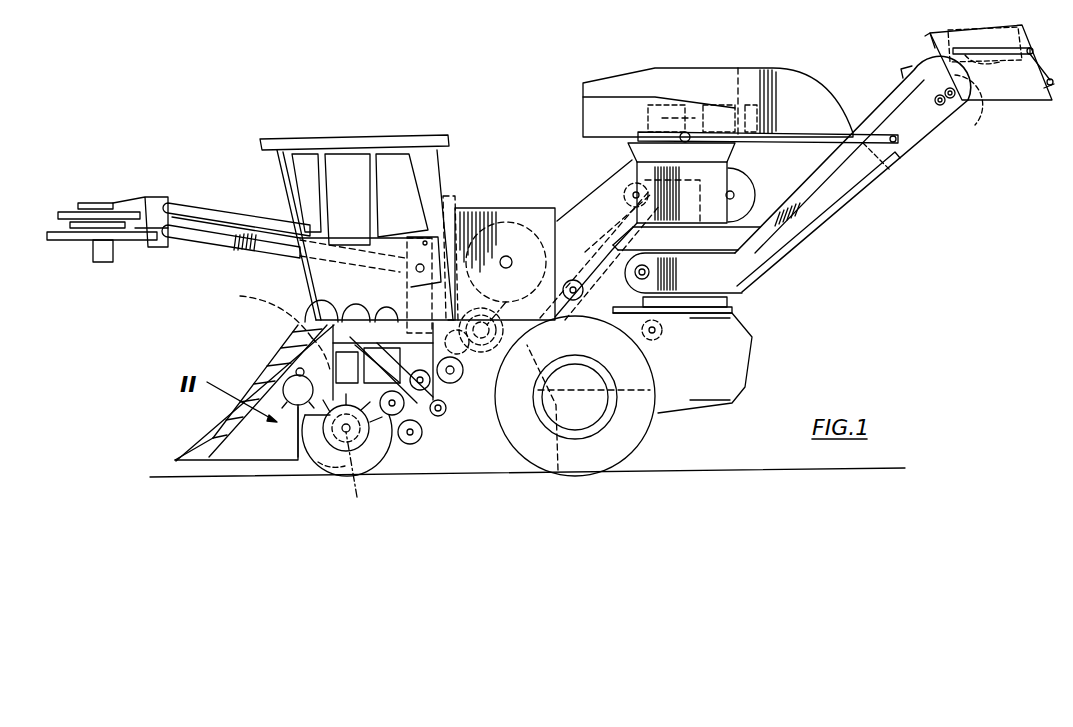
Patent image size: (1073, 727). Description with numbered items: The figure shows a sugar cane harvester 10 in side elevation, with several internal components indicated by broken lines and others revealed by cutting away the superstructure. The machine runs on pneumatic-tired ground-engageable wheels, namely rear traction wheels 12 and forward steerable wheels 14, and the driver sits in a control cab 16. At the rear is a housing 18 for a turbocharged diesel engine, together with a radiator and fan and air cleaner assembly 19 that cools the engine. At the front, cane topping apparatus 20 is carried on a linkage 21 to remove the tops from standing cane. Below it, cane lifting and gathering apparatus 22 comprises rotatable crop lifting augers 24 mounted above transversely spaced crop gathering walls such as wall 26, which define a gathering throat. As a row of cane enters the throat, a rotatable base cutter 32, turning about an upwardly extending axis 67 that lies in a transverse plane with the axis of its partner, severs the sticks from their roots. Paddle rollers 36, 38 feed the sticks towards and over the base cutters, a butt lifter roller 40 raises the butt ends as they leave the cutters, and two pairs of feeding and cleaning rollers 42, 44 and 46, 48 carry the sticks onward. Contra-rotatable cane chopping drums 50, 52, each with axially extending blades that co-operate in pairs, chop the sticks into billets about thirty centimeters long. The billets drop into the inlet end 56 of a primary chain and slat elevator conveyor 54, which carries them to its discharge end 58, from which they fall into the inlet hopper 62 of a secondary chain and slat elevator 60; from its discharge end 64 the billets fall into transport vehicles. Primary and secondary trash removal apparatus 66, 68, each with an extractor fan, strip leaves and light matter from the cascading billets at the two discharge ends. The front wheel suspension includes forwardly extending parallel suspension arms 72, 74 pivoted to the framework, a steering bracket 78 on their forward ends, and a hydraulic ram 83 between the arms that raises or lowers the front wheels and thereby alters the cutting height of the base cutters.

The sugar cane harvester 10 is at (482, 101).
The rear traction wheels 12 is at (645, 447).
The forward steerable wheels 14 is at (317, 464).
The control cab 16 is at (275, 152).
The housing 18 is at (752, 335).
The radiator and fan and air cleaner assembly 19 is at (510, 209).
The cane topping apparatus 20 is at (128, 197).
The linkage 21 is at (236, 242).
The cane lifting and gathering apparatus 22 is at (249, 359).
The crop lifting augers 24 is at (257, 384).
The crop gathering wall 26 is at (252, 422).
The base cutter 32 is at (328, 477).
The paddle roller 36 is at (276, 351).
The paddle roller 38 is at (303, 415).
The butt lifter roller 40 is at (420, 452).
The feeding and cleaning roller 42 is at (444, 440).
The feeding and cleaning roller 44 is at (273, 325).
The feeding and cleaning roller 46 is at (440, 444).
The feeding and cleaning roller 48 is at (418, 333).
The cane chopping drum 50 is at (481, 352).
The cane chopping drum 52 is at (446, 202).
The primary chain and slat elevator conveyor 54 is at (582, 347).
The inlet end 56 is at (558, 470).
The discharge end 58 is at (618, 172).
The secondary chain and slat elevator 60 is at (793, 245).
The inlet hopper 62 is at (658, 222).
The discharge end 64 is at (977, 102).
The primary trash removal apparatus 66 is at (746, 68).
The axis 67 is at (366, 475).
The secondary trash removal apparatus 68 is at (970, 21).
The suspension arm 72 is at (378, 320).
The suspension arm 74 is at (347, 320).
The steering bracket 78 is at (309, 300).
The hydraulic ram 83 is at (392, 328).